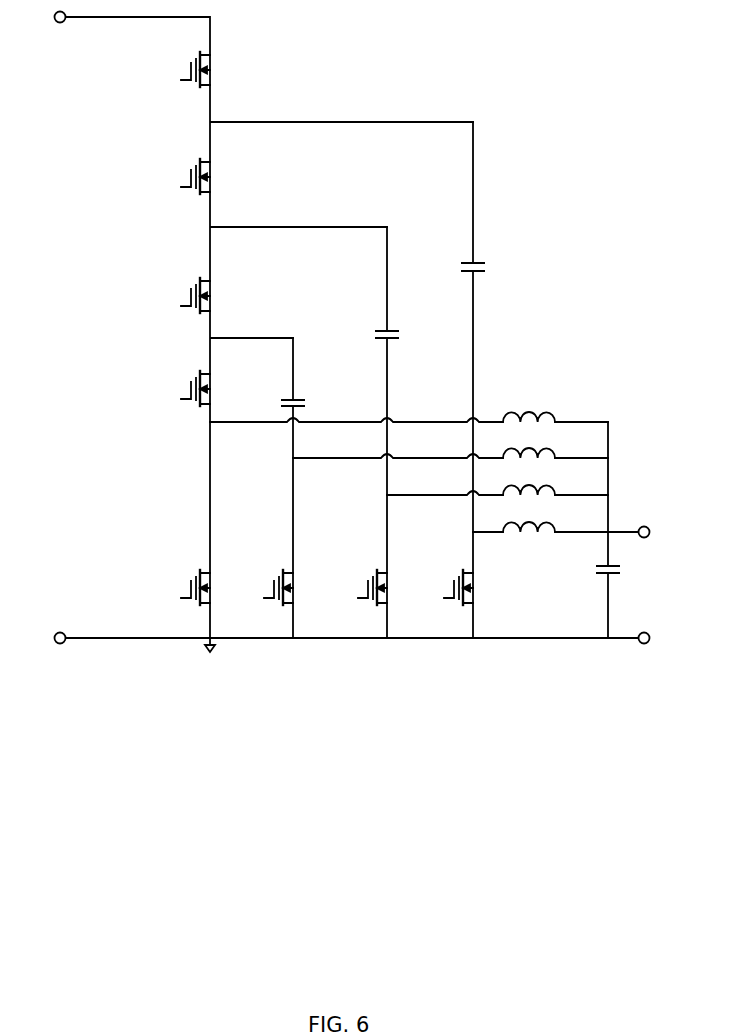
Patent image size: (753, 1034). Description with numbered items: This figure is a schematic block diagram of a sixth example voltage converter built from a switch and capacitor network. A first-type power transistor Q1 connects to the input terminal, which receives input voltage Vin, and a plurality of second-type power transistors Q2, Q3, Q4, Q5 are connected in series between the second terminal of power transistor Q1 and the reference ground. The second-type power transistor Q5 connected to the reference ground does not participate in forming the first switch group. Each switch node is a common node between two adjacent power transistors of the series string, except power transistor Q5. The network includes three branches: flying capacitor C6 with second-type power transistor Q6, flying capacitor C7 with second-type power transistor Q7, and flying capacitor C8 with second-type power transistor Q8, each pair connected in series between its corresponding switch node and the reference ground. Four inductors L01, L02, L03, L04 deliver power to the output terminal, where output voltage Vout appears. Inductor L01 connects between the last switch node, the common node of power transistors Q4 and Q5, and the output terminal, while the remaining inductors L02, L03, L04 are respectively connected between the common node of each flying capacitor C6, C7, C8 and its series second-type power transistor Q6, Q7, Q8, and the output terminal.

The first-type power transistor Q1 is at (177, 69).
The second-type power transistor Q2 is at (177, 176).
The second-type power transistor Q3 is at (177, 295).
The second-type power transistor Q4 is at (177, 388).
The second-type power transistor Q5 is at (177, 587).
The second-type power transistor Q6 is at (260, 587).
The second-type power transistor Q7 is at (354, 587).
The second-type power transistor Q8 is at (440, 587).
The flying capacitor C6 is at (309, 488).
The flying capacitor C7 is at (404, 432).
The flying capacitor C8 is at (489, 380).
The inductor L01 is at (551, 407).
The inductor L02 is at (551, 443).
The inductor L03 is at (551, 480).
The inductor L04 is at (551, 517).
The input voltage Vin is at (68, 315).
The output voltage Vout is at (631, 575).